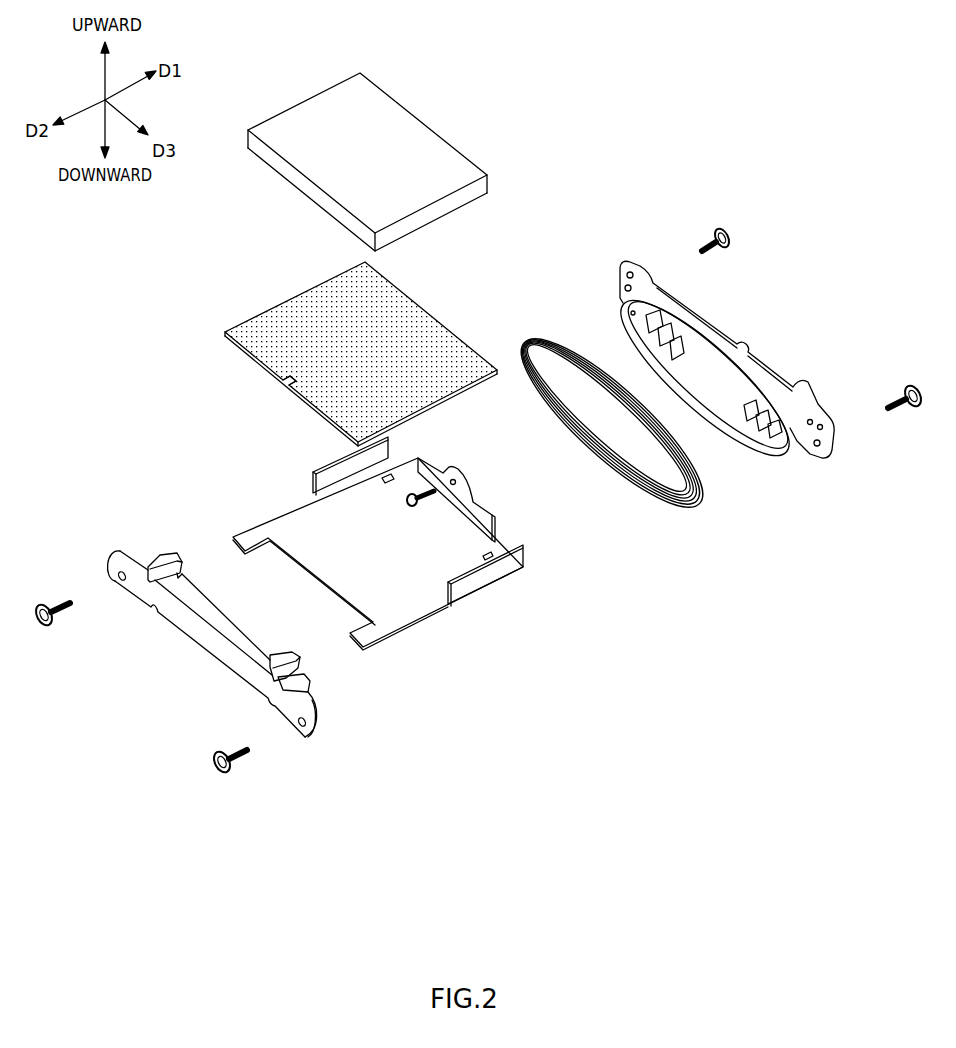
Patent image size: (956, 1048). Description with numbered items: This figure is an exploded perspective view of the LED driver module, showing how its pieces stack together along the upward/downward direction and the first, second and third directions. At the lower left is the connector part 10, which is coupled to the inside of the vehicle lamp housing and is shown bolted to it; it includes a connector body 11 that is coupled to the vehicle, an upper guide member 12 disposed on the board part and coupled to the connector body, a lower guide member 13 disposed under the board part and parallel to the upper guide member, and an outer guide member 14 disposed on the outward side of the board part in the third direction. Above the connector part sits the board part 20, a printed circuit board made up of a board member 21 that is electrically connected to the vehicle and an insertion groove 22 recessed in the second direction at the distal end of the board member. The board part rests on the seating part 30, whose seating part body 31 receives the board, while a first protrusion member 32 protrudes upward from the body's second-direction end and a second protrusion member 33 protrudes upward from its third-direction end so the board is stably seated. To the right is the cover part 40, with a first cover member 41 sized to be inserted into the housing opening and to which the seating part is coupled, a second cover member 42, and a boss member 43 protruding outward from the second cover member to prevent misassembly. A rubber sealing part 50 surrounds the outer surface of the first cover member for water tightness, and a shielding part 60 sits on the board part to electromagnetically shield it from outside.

The connector part 10 is at (256, 613).
The connector body 11 is at (233, 662).
The upper guide member 12 is at (288, 665).
The lower guide member 13 is at (312, 686).
The outer guide member 14 is at (150, 563).
The board part 20 is at (376, 353).
The board member 21 is at (417, 330).
The insertion groove 22 is at (293, 372).
The seating part 30 is at (381, 578).
The seating part body 31 is at (415, 593).
The first protrusion member 32 is at (478, 520).
The second protrusion member 33 is at (317, 482).
The cover part 40 is at (730, 424).
The first cover member 41 is at (750, 376).
The second cover member 42 is at (800, 384).
The boss member 43 is at (838, 430).
The sealing part 50 is at (680, 505).
The shielding part 60 is at (435, 143).